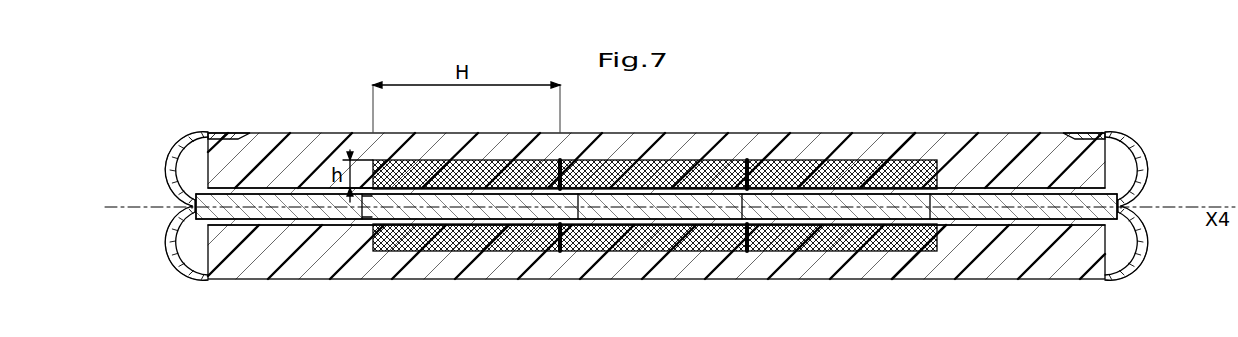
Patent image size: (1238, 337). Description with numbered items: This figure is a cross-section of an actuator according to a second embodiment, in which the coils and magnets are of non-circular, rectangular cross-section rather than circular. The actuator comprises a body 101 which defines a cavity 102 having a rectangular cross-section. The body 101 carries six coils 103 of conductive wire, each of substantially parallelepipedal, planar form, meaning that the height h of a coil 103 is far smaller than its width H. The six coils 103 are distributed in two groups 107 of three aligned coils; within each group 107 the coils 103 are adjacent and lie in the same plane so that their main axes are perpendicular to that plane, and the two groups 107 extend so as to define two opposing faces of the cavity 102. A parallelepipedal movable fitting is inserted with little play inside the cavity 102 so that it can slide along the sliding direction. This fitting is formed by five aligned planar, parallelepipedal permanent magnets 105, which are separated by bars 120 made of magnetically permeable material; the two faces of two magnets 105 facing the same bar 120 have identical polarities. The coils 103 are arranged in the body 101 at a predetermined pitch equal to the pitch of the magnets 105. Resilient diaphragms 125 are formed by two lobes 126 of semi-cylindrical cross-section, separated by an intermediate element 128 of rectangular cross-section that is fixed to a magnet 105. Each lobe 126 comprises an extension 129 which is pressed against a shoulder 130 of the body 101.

The body 101 is at (962, 132).
The cavity 102 is at (186, 192).
The coil 103 is at (492, 158).
The permanent magnet 105 is at (270, 252).
The group of coils 107 is at (873, 153).
The bar 120 is at (363, 220).
The resilient diaphragm 125 is at (160, 145).
The lobe 126 is at (1150, 148).
The intermediate element 128 is at (186, 210).
The extension 129 is at (223, 132).
The shoulder 130 is at (302, 132).